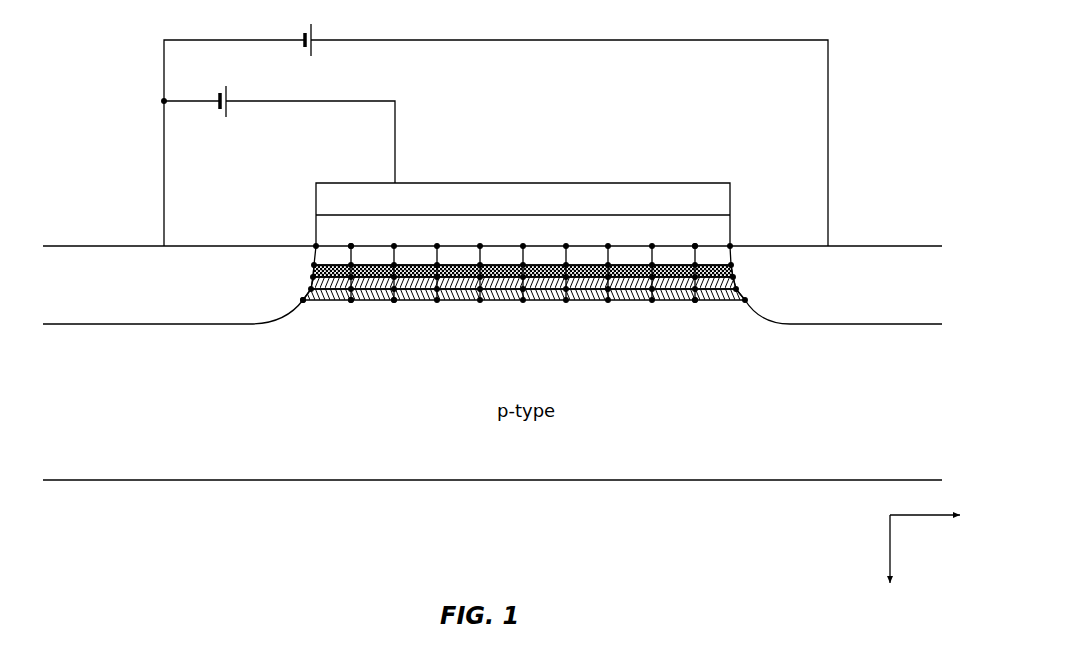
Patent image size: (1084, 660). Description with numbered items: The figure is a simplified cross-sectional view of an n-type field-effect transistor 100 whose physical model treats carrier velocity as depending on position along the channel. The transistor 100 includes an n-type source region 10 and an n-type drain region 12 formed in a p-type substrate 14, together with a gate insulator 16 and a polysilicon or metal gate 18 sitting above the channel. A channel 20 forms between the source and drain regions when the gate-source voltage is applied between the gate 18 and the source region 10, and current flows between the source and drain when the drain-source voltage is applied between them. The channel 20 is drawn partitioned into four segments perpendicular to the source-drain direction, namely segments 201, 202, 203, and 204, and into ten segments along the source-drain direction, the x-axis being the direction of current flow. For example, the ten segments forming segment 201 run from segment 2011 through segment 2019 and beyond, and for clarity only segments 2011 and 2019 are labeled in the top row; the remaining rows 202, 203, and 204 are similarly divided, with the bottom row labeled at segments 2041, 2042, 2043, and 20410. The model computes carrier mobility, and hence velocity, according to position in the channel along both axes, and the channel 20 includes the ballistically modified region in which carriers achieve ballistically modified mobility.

The n-type field-effect transistor 100 is at (892, 75).
The n-type source region 10 is at (108, 258).
The n-type drain region 12 is at (873, 246).
The p-type substrate 14 is at (793, 468).
The gate insulator 16 is at (731, 231).
The gate 18 is at (688, 190).
The channel 20 is at (627, 315).
The channel segment 201 is at (313, 263).
The channel segment 202 is at (311, 278).
The channel segment 203 is at (737, 283).
The channel segment 204 is at (747, 297).
The channel segment 2011 is at (333, 246).
The channel segment 2019 is at (677, 246).
The channel segment 2041 is at (319, 303).
The channel segment 2042 is at (375, 303).
The channel segment 2043 is at (413, 303).
The channel segment 20410 is at (715, 303).